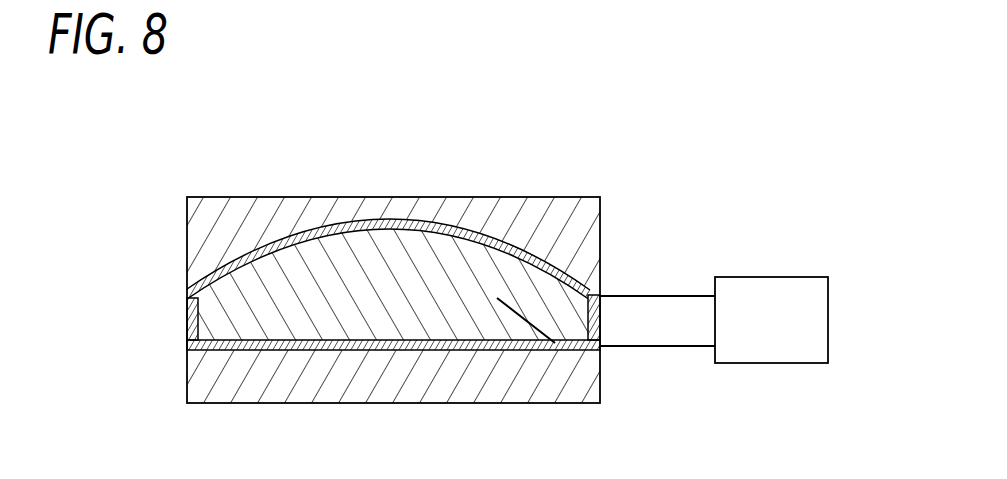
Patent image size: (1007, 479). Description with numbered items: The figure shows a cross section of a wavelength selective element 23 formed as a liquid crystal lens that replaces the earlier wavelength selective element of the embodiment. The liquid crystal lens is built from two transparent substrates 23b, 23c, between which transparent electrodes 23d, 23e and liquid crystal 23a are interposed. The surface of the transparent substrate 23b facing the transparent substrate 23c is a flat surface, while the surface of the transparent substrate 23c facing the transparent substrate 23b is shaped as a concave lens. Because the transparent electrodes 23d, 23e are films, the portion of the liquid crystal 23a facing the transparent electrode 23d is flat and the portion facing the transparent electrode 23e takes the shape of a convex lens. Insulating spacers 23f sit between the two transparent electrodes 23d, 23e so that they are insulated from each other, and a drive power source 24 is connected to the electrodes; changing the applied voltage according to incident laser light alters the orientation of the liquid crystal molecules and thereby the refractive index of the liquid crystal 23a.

The wavelength selective element 23 is at (590, 213).
The liquid crystal 23a is at (600, 362).
The transparent substrate 23b is at (188, 398).
The transparent substrate 23c is at (188, 227).
The transparent electrode 23d is at (188, 350).
The transparent electrode 23e is at (188, 278).
The insulating spacer 23f is at (188, 318).
The drive power source 24 is at (733, 288).